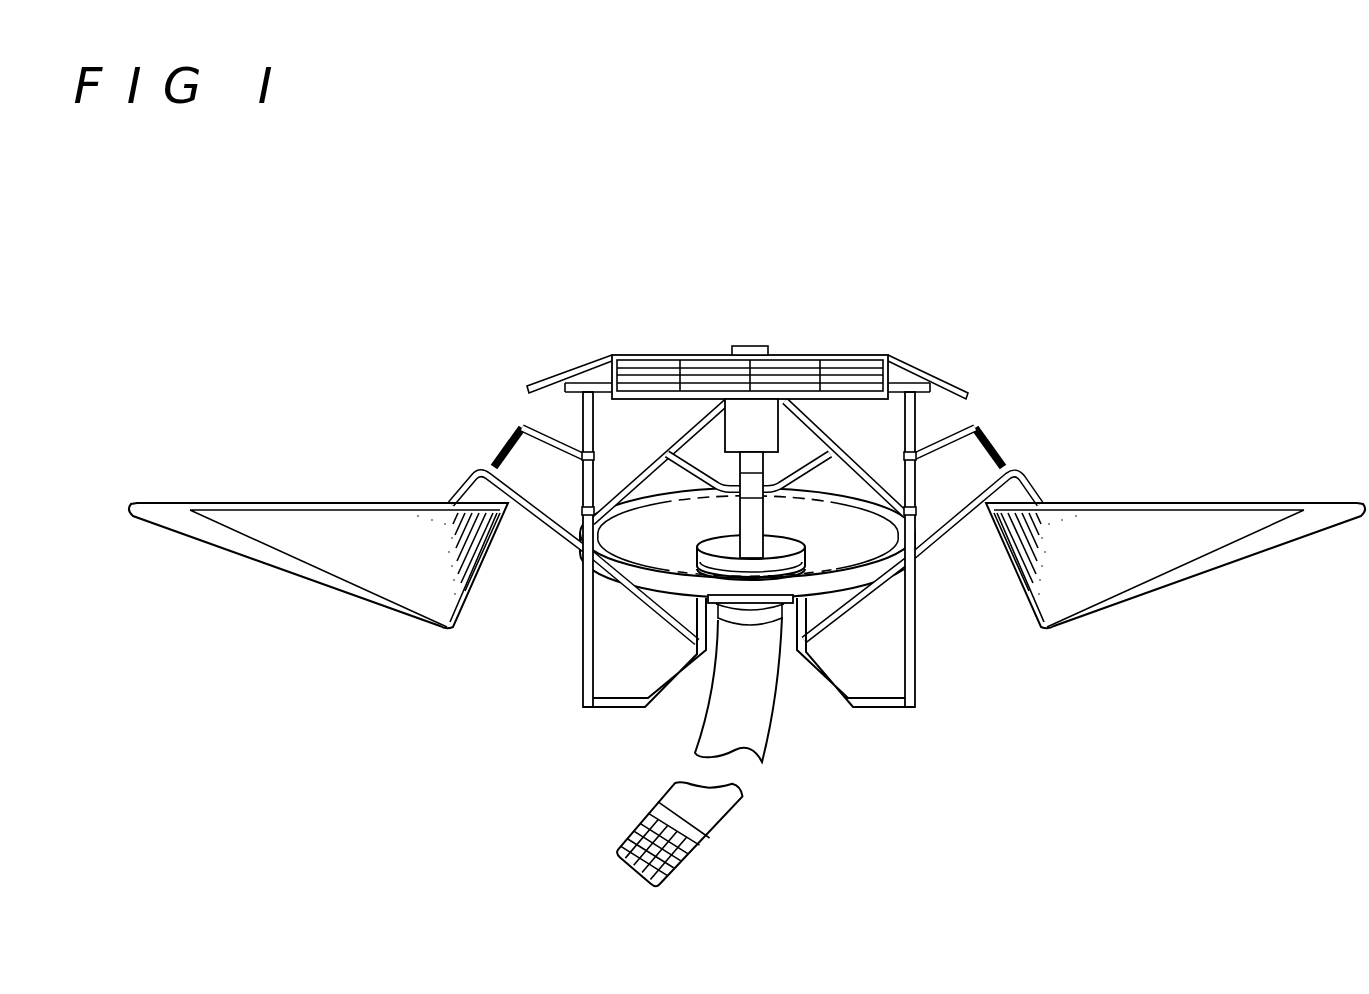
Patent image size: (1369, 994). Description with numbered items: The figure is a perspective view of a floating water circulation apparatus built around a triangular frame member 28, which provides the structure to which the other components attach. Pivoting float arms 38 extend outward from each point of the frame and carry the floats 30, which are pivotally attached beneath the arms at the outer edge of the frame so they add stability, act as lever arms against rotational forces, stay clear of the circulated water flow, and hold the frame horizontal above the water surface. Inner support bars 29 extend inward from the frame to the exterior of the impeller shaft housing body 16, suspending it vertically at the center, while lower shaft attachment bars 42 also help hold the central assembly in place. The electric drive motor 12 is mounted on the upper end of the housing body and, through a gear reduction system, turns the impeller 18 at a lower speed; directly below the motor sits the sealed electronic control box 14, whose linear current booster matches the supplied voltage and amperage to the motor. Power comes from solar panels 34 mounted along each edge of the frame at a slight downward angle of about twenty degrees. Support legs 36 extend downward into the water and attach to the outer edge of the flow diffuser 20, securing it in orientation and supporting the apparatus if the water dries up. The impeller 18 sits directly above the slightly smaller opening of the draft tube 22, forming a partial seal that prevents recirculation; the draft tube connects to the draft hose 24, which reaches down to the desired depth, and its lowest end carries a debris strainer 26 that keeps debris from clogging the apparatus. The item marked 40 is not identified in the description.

The electric drive motor 12 is at (735, 345).
The electronic control box 14 is at (743, 418).
The impeller shaft housing body 16 is at (693, 558).
The impeller 18 is at (732, 512).
The flow diffuser 20 is at (850, 565).
The draft tube 22 is at (770, 603).
The draft hose 24 is at (747, 667).
The debris strainer 26 is at (624, 828).
The triangular frame member 28 is at (903, 368).
The inner support bars 29 is at (843, 450).
The floats 30 is at (317, 506).
The solar panels 34 is at (600, 362).
The support legs 36 is at (867, 715).
The pivoting float arms 38 is at (462, 478).
The connector 40 is at (512, 432).
The lower shaft attachment bars 42 is at (862, 572).